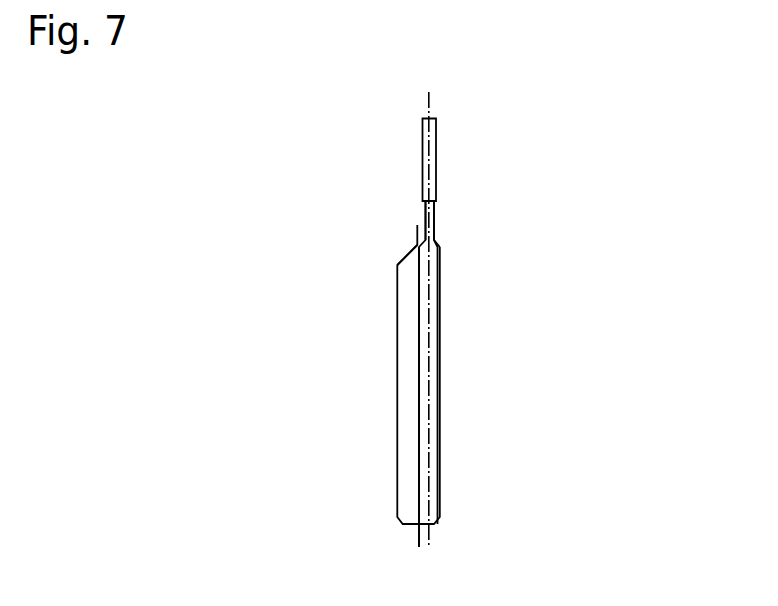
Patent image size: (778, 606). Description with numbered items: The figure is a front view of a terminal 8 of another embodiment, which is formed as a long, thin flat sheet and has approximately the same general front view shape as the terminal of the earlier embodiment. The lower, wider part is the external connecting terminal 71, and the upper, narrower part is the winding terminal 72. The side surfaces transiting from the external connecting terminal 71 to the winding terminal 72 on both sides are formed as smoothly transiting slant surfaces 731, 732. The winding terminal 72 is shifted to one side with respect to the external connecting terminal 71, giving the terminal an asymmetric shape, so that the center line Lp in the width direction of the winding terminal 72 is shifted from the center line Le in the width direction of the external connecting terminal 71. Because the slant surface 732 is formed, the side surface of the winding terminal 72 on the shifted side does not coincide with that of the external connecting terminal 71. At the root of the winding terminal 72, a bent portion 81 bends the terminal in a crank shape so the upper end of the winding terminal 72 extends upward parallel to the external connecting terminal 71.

The external connecting terminal 71 is at (397, 368).
The winding terminal 72 is at (437, 182).
The slant surface 731 is at (405, 257).
The slant surface 732 is at (440, 240).
The terminal 8 is at (440, 398).
The bent portion 81 is at (424, 213).
The center line Lp is at (430, 329).
The center line Le is at (419, 433).